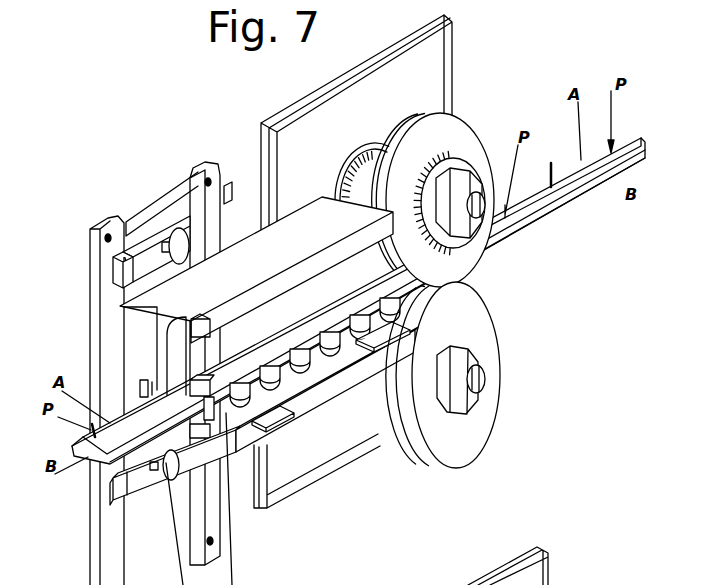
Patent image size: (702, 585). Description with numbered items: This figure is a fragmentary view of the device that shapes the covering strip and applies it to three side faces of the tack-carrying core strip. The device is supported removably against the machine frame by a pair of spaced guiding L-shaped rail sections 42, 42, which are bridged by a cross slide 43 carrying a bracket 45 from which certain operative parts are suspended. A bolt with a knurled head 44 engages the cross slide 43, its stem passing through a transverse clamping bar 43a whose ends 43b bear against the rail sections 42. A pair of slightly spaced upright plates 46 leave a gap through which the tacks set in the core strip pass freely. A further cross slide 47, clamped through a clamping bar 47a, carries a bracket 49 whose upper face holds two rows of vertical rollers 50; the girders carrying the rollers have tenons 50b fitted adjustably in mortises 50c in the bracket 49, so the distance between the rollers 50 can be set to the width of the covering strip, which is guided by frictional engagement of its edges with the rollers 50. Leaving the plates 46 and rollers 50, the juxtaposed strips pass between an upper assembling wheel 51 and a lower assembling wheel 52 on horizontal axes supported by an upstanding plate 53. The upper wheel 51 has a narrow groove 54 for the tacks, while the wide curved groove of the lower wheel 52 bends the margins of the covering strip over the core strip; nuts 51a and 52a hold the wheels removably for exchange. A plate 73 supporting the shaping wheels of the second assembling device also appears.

The guiding L-shaped rail section 42 is at (203, 161).
The cross slide 43 is at (157, 225).
The transverse clamping bar 43a is at (145, 262).
The end of clamping bar 43b is at (47, 258).
The knurled head 44 is at (172, 228).
The bracket 45 is at (244, 258).
The upright plate 46 is at (176, 375).
The cross slide 47 is at (150, 498).
The clamping bar 47a is at (130, 485).
The bracket 49 is at (351, 368).
The vertical roller 50 is at (143, 386).
The tenon 50b is at (283, 437).
The mortise 50c is at (405, 360).
The upper assembling wheel 51 is at (462, 138).
The nut 51a is at (453, 180).
The lower assembling wheel 52 is at (443, 318).
The nut 52a is at (472, 403).
The upstanding plate 53 is at (437, 70).
The narrow groove 54 is at (402, 118).
The plate 73 is at (463, 583).